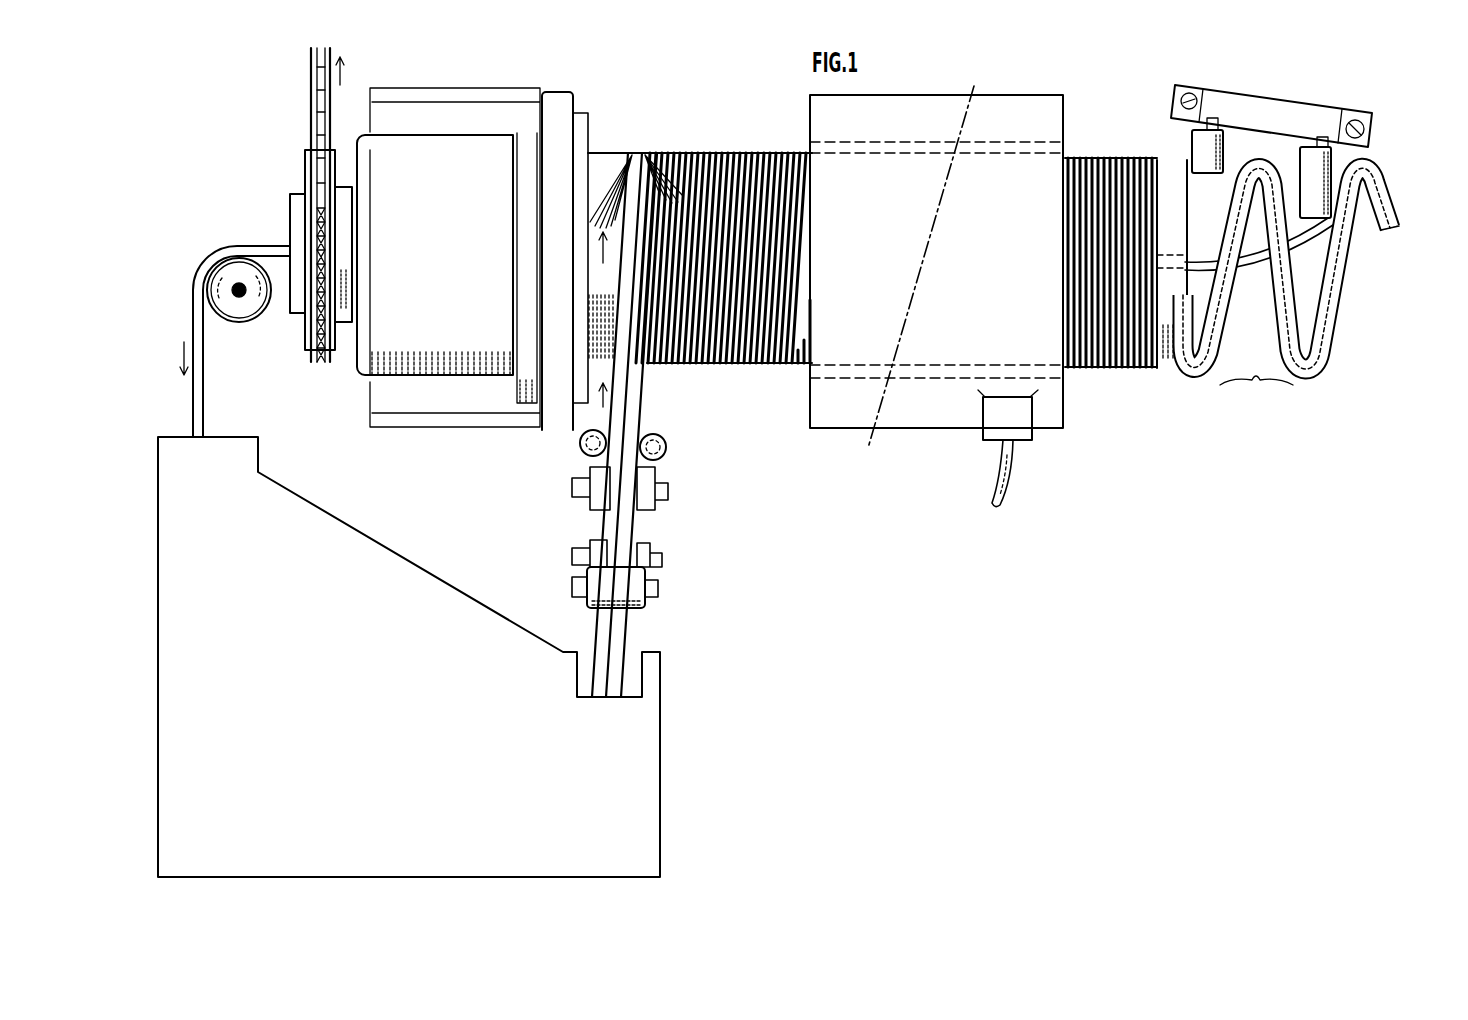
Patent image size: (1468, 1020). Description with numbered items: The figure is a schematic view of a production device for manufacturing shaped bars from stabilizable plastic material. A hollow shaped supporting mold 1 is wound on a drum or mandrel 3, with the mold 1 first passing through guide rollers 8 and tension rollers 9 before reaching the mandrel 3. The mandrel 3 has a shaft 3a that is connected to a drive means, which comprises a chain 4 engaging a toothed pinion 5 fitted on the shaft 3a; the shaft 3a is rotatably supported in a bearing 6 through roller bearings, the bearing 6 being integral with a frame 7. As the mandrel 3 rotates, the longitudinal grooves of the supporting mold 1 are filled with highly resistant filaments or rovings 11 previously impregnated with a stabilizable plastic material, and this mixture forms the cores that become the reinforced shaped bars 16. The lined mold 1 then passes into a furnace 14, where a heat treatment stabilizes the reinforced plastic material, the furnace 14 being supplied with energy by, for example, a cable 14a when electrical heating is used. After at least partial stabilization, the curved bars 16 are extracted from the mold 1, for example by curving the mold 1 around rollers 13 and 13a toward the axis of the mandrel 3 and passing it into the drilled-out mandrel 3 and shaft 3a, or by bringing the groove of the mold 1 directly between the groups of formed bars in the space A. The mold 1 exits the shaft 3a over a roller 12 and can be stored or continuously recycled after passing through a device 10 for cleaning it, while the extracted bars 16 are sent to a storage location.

The shaped supporting mold 1 is at (200, 417).
The mandrel 3 is at (1163, 352).
The shaft 3a is at (297, 208).
The chain 4 is at (312, 90).
The toothed pinion 5 is at (305, 163).
The bearing 6 is at (487, 362).
The frame 7 is at (548, 412).
The guide rollers 8 is at (648, 470).
The tension rollers 9 is at (637, 578).
The cleaning device 10 is at (398, 609).
The filaments or rovings 11 is at (636, 258).
The roller 12 is at (253, 310).
The roller 13 is at (1200, 150).
The roller 13a is at (1340, 150).
The furnace 14 is at (908, 413).
The cable 14a is at (1002, 473).
The shaped bars 16 is at (1402, 230).
The space A is at (1256, 396).